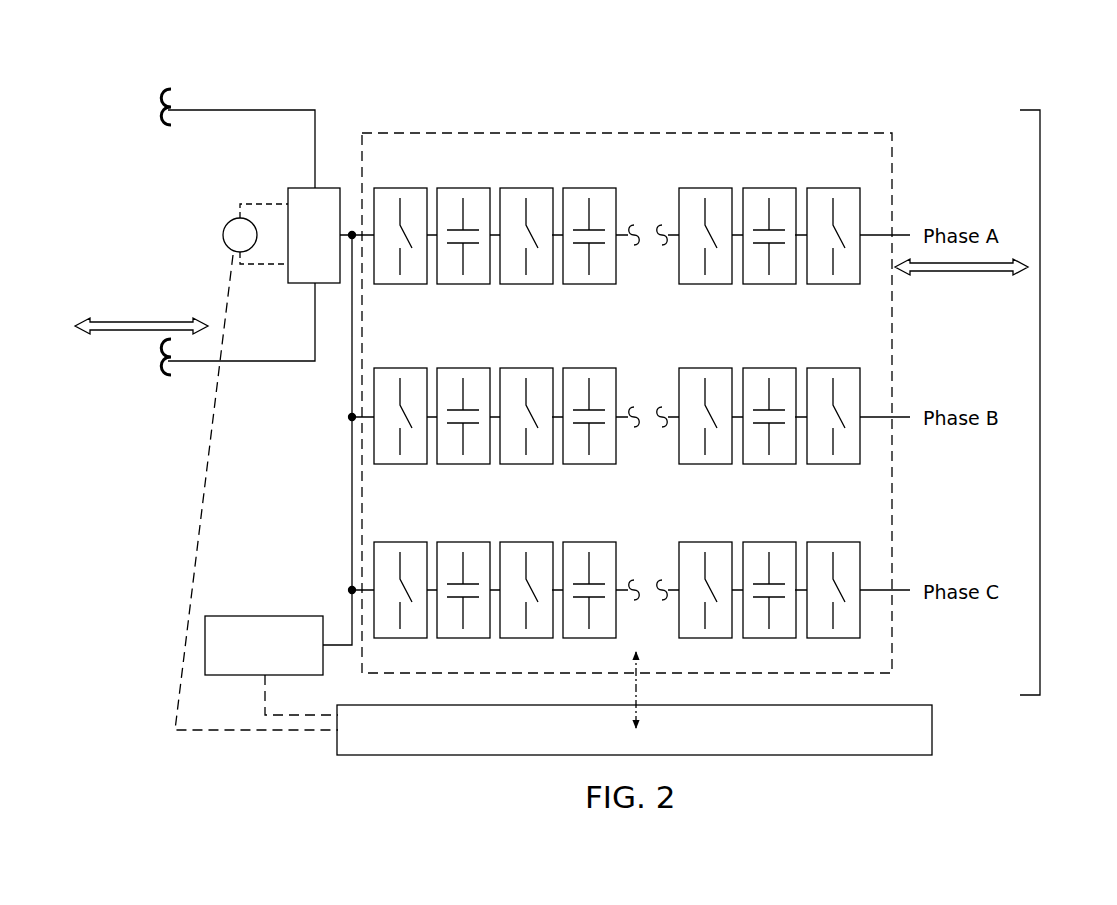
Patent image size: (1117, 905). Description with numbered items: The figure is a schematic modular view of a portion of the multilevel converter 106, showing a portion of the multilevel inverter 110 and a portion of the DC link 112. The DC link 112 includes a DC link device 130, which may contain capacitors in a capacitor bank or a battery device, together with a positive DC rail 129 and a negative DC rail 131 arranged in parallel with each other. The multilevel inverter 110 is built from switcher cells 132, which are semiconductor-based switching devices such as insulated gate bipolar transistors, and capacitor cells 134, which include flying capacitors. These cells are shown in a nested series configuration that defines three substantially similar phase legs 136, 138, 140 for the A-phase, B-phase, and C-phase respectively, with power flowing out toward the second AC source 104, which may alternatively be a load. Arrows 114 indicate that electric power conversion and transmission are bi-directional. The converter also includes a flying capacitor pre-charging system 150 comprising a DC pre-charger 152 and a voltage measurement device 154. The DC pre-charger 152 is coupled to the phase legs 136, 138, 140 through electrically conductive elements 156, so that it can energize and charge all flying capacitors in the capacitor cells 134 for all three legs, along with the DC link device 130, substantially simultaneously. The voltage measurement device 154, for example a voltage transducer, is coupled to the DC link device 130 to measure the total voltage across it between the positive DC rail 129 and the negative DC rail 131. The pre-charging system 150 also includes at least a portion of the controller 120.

The second alternating current (AC) source 104 is at (1048, 262).
The multilevel converter 106 is at (176, 71).
The multilevel inverter 110 is at (858, 133).
The direct current (DC) link 112 is at (221, 204).
The arrows 114 is at (105, 334).
The controller 120 is at (623, 742).
The positive DC rail 129 is at (257, 110).
The DC link device 130 is at (330, 188).
The negative DC rail 131 is at (271, 363).
The switcher cells 132 is at (408, 197).
The capacitor cells 134 is at (600, 197).
The phase leg 136 is at (642, 234).
The phase leg 138 is at (647, 440).
The phase leg 140 is at (646, 611).
The flying capacitor pre-charging system 150 is at (209, 253).
The DC pre-charger 152 is at (238, 675).
The voltage measurement device 154 is at (222, 224).
The electrically conductive elements 156 is at (352, 535).